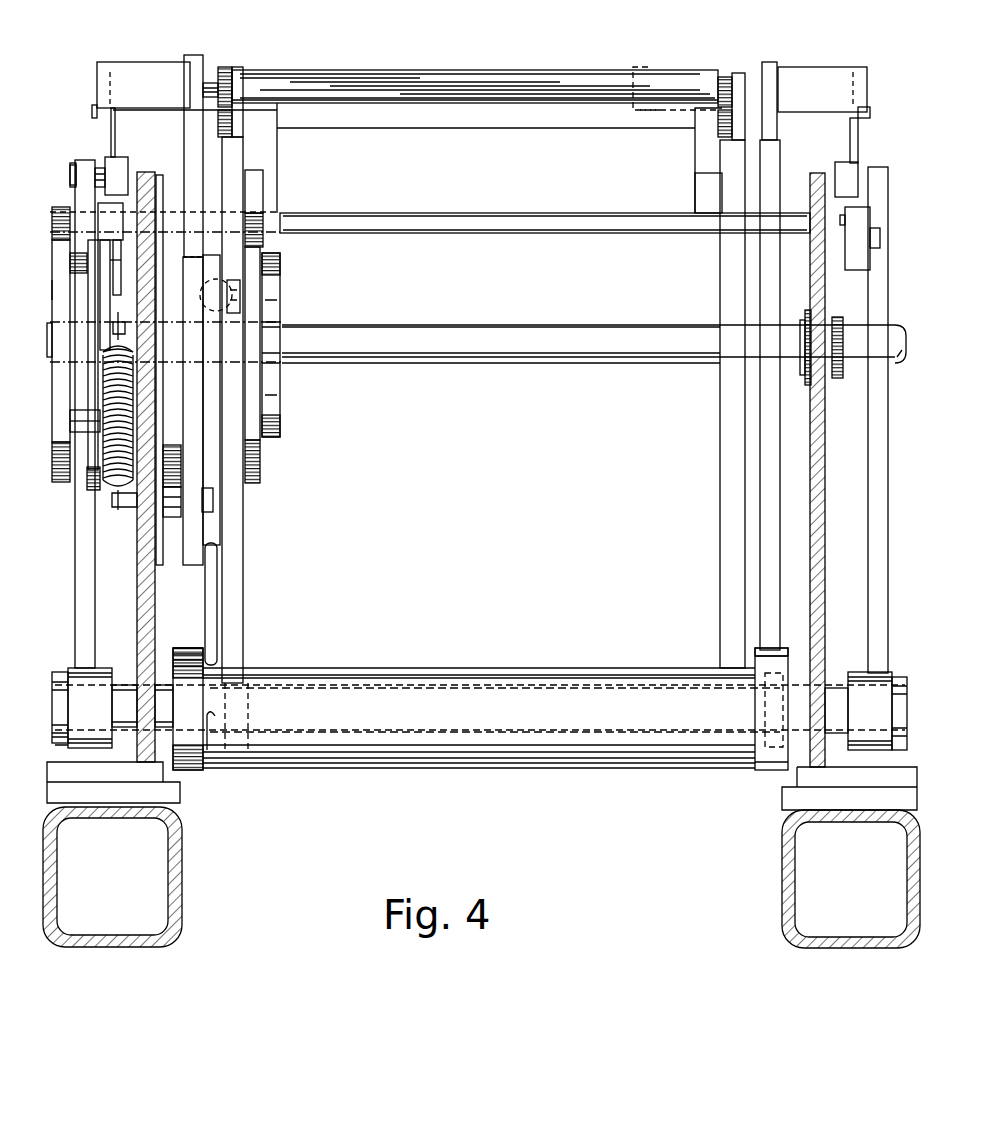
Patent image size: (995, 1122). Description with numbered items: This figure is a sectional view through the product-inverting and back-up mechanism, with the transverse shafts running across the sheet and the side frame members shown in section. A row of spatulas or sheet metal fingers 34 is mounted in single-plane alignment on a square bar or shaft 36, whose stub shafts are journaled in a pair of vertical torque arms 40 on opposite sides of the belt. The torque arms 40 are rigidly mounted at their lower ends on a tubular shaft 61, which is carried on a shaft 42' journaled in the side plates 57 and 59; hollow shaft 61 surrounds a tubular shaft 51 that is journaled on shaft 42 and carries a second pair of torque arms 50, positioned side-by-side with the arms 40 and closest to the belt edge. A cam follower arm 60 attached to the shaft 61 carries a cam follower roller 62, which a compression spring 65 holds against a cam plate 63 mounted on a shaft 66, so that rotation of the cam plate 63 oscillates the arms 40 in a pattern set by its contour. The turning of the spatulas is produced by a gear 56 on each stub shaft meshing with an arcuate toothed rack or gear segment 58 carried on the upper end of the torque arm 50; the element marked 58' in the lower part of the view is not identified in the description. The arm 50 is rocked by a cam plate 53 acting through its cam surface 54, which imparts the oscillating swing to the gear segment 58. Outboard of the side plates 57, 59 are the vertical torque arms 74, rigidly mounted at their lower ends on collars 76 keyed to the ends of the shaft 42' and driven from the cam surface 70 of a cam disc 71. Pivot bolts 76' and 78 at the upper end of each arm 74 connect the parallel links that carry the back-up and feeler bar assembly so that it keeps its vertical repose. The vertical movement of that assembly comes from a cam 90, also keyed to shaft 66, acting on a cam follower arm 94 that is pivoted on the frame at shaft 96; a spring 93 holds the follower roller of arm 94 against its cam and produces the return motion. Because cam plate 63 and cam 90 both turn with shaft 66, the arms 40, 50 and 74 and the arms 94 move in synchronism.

The spatulas 34 is at (366, 110).
The square bar 36 is at (481, 84).
The vertical torque arms 40 is at (188, 150).
The shaft 42 is at (63, 708).
The shaft 42' is at (136, 684).
The torque arm 50 is at (240, 197).
The tubular shaft 51 is at (322, 752).
The cam plate 53 is at (280, 255).
The cam surface 54 is at (265, 240).
The gear 56 is at (226, 68).
The side plate 57 is at (141, 527).
The gear segment 58 is at (238, 124).
The gear 58' is at (152, 636).
The side plate 59 is at (815, 457).
The cam follower arm 60 is at (192, 588).
The tubular shaft 61 is at (215, 758).
The cam follower roller 62 is at (170, 515).
The cam plate 63 is at (175, 456).
The compression spring 65 is at (216, 612).
The shaft 66 is at (50, 340).
The cam surface 70 is at (62, 258).
The cam disc 71 is at (52, 292).
The vertical torque arm 74 is at (82, 190).
The collar 76 is at (41, 746).
The pivot bolt 76' is at (58, 152).
The pivot bolt 78 is at (72, 222).
The cam disc 90 is at (90, 428).
The spring 93 is at (105, 410).
The cam follower arm 94 is at (117, 250).
The shaft 96 is at (478, 222).